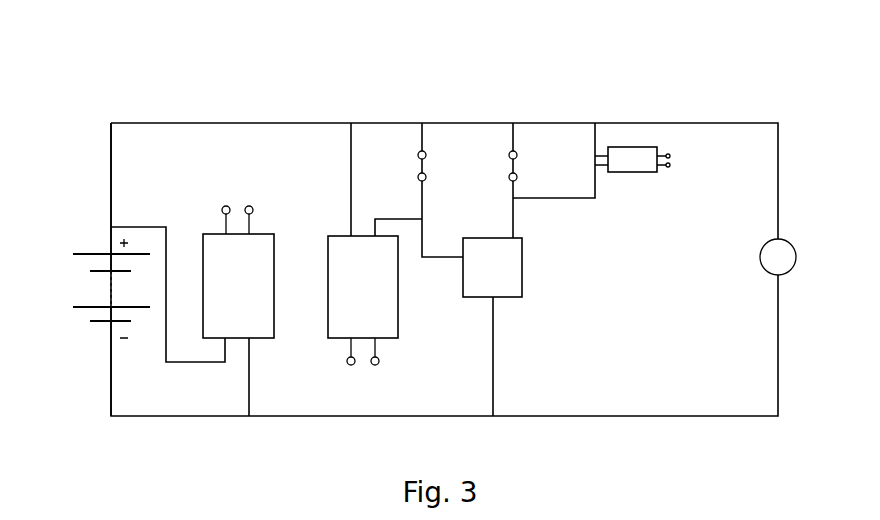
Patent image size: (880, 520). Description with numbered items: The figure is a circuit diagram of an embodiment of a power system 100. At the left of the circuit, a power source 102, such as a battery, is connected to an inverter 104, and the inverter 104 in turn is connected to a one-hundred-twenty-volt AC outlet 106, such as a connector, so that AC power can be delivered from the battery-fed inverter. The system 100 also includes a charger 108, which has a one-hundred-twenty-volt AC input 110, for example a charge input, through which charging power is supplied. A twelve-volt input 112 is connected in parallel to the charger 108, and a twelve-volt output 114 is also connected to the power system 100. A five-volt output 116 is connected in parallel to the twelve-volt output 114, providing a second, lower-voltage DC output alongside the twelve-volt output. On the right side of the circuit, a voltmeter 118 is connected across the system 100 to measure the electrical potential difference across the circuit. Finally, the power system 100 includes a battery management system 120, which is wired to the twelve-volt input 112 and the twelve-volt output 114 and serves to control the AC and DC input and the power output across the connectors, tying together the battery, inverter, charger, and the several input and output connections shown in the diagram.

The power system 100 is at (654, 90).
The power source 102 is at (100, 247).
The inverter 104 is at (261, 246).
The 120 VAC outlet 106 is at (235, 207).
The charger 108 is at (380, 312).
The 120 VAC input 110 is at (355, 367).
The 12V input 112 is at (433, 153).
The 12V output 114 is at (518, 165).
The 5V output 116 is at (650, 147).
The voltmeter 118 is at (783, 243).
The battery management system 120 is at (505, 283).